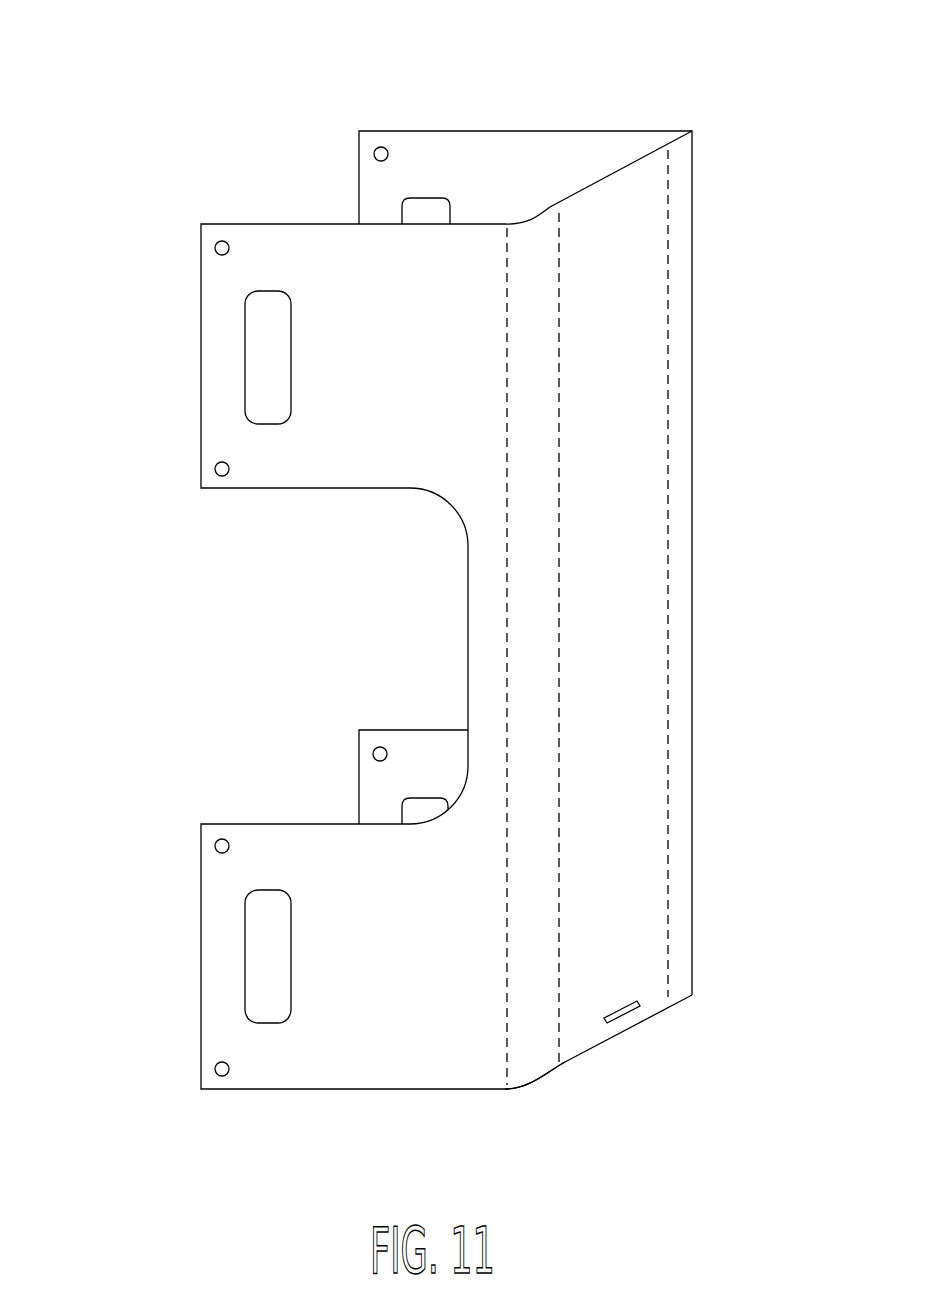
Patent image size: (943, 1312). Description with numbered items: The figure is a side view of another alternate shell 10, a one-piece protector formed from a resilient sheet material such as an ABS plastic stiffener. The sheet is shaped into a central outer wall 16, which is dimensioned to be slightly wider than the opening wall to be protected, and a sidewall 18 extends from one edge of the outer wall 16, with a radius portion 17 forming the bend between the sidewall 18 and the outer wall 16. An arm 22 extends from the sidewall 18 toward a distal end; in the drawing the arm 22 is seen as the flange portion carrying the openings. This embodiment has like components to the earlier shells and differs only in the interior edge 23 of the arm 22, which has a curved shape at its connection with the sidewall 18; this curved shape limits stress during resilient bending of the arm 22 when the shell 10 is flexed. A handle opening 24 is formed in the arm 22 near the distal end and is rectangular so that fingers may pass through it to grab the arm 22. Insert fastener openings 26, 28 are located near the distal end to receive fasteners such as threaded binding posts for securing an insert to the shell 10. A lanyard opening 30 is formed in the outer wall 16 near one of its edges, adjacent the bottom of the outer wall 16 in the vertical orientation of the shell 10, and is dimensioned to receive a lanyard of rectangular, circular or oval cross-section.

The shell 10 is at (648, 122).
The outer wall 16 is at (634, 607).
The radius portion 17 is at (533, 1085).
The sidewall 18 is at (468, 633).
The arm 22 is at (408, 368).
The interior edge 23 is at (424, 520).
The handle opening 24 is at (255, 385).
The insert fastener opening 26 is at (374, 153).
The insert fastener opening 28 is at (215, 247).
The lanyard opening 30 is at (632, 1012).